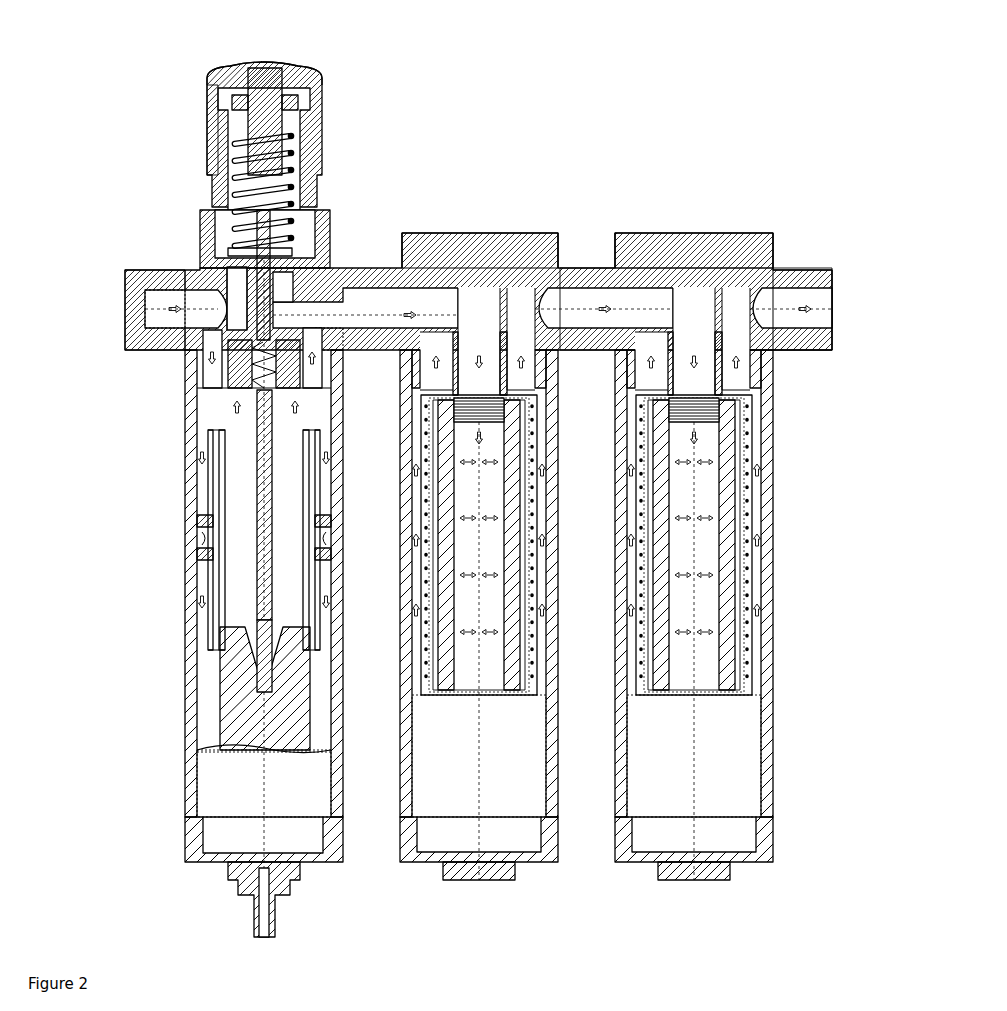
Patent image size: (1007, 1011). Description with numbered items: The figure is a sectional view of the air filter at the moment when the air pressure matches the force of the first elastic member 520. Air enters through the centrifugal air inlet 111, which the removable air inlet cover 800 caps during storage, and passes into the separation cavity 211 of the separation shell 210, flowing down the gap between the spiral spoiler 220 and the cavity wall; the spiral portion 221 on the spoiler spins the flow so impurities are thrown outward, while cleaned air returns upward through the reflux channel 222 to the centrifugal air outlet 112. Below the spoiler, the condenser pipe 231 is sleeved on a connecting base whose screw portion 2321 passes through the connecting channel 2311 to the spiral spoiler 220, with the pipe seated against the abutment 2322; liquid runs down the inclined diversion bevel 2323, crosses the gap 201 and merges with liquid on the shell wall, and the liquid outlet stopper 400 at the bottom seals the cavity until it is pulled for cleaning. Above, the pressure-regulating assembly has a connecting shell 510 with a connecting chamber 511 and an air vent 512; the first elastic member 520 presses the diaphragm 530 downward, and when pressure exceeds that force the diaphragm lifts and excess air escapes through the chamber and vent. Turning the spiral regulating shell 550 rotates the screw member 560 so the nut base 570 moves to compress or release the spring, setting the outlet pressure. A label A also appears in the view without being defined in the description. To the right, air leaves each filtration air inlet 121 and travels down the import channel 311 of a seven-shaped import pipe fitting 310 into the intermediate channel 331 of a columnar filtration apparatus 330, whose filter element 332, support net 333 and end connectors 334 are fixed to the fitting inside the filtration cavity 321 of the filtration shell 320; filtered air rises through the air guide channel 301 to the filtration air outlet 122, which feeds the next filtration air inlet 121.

The centrifugal air inlet 111 is at (153, 292).
The centrifugal air outlet 112 is at (327, 337).
The filtration air inlet 121 is at (380, 265).
The filtration air outlet 122 is at (560, 265).
The gap 201 is at (330, 751).
The separation shell 210 is at (197, 842).
The separation cavity 211 is at (243, 803).
The spiral spoiler 220 is at (206, 402).
The spiral portion 221 is at (198, 542).
The reflux channel 222 is at (217, 452).
The condenser pipe 231 is at (223, 495).
The connecting channel 2311 is at (238, 588).
The screw portion 2321 is at (260, 638).
The abutment 2322 is at (257, 712).
The inclined diversion bevel 2323 is at (203, 745).
The air guide channel 301 is at (745, 350).
The import pipe fitting 310 is at (675, 255).
The import channel 311 is at (756, 354).
The filtration shell 320 is at (756, 598).
The filtration cavity 321 is at (757, 756).
The filtration apparatus 330 is at (789, 545).
The intermediate channel 331 is at (776, 547).
The filter element 332 is at (760, 545).
The support net 333 is at (757, 545).
The end connector 334 is at (751, 545).
The liquid outlet stopper 400 is at (257, 898).
The connecting shell 510 is at (320, 90).
The connecting chamber 511 is at (303, 232).
The air vent 512 is at (300, 167).
The first elastic member 520 is at (207, 147).
The diaphragm 530 is at (198, 240).
The spiral regulating shell 550 is at (238, 68).
The screw member 560 is at (287, 66).
The nut base 570 is at (207, 90).
The air inlet cover 800 is at (143, 315).
The flow direction A is at (228, 258).